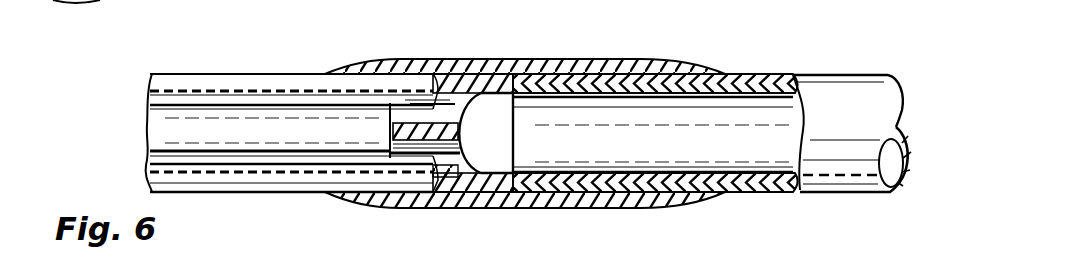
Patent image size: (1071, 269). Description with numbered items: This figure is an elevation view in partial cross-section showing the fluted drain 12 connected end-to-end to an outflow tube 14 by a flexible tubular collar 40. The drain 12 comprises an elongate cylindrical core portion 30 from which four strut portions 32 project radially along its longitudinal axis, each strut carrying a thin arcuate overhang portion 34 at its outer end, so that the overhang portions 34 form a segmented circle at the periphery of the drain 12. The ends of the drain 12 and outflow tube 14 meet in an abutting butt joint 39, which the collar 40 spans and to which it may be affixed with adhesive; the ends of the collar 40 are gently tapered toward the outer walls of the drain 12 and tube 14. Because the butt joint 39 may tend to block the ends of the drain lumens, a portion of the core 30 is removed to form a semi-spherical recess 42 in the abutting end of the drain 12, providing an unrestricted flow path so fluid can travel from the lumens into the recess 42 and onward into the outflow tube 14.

The drain 12 is at (157, 69).
The outflow tube 14 is at (778, 76).
The core portion 30 is at (394, 130).
The strut portions 32 is at (413, 106).
The overhang portions 34 is at (207, 122).
The butt joint 39 is at (519, 158).
The tubular collar 40 is at (570, 60).
The semi-spherical recess 42 is at (472, 104).